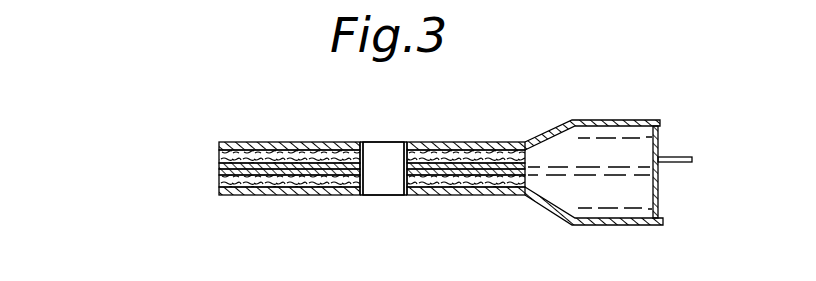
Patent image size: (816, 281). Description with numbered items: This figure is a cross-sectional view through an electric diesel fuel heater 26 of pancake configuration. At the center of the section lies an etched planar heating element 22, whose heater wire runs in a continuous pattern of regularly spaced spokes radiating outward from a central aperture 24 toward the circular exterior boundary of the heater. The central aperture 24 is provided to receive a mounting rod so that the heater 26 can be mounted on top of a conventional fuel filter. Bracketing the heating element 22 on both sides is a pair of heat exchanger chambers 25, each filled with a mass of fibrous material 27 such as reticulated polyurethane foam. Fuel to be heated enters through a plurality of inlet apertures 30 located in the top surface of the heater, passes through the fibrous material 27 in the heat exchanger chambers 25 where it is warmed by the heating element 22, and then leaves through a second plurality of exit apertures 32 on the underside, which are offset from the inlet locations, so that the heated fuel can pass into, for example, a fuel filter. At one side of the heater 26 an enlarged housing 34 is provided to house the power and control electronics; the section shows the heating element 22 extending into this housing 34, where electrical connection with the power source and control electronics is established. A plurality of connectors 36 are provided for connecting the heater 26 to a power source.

The planar heating element 22 is at (622, 163).
The central aperture 24 is at (400, 197).
The heat exchanger chambers 25 is at (361, 150).
The electric diesel fuel heater 26 is at (500, 121).
The fibrous material 27 is at (278, 150).
The inlet apertures 30 is at (262, 148).
The exit apertures 32 is at (248, 195).
The enlarged housing 34 is at (608, 120).
The connectors 36 is at (678, 162).